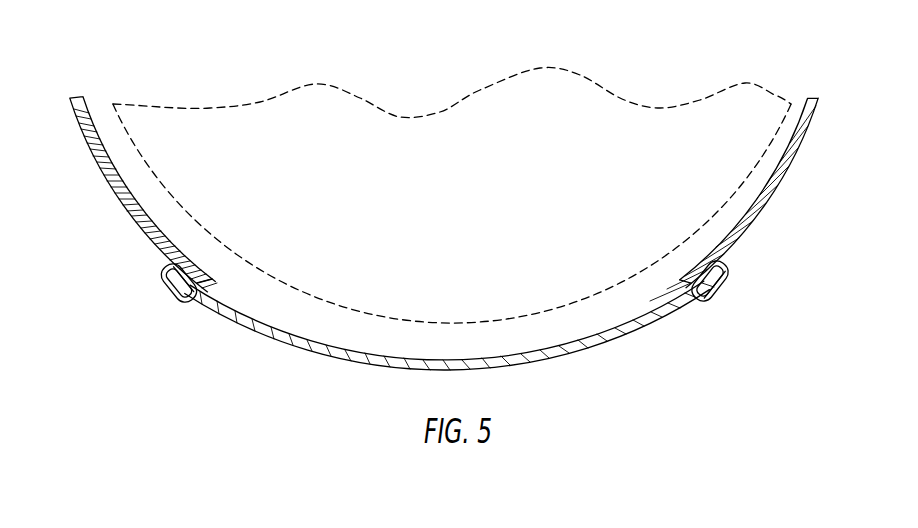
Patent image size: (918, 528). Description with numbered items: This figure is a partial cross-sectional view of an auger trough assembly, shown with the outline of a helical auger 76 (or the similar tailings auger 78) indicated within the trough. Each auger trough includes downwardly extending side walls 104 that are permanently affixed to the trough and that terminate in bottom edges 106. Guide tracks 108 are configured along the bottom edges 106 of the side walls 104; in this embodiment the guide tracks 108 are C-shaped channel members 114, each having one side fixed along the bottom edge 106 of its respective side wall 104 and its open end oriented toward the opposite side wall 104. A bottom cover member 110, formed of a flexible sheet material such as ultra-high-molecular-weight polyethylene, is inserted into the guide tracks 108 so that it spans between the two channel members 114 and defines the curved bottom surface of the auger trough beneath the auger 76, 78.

The helical auger 76 is at (452, 175).
The auger 78 is at (556, 68).
The side wall 104 is at (138, 223).
The bottom edge 106 is at (193, 285).
The guide track 108 is at (158, 276).
The bottom cover member 110 is at (586, 350).
The C-shaped channel member 114 is at (178, 300).